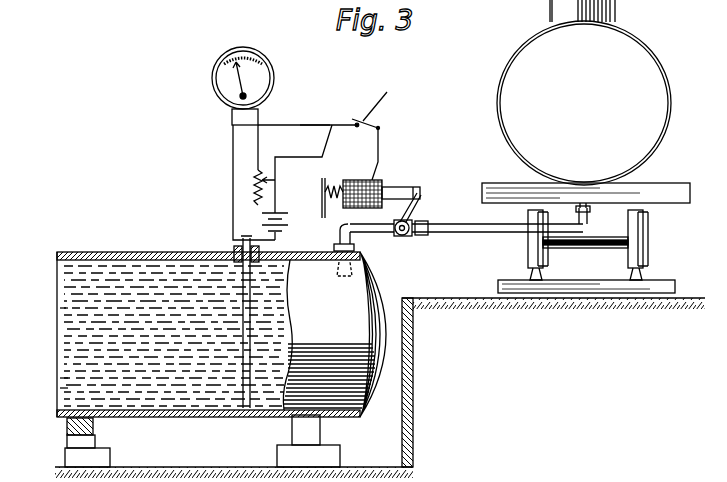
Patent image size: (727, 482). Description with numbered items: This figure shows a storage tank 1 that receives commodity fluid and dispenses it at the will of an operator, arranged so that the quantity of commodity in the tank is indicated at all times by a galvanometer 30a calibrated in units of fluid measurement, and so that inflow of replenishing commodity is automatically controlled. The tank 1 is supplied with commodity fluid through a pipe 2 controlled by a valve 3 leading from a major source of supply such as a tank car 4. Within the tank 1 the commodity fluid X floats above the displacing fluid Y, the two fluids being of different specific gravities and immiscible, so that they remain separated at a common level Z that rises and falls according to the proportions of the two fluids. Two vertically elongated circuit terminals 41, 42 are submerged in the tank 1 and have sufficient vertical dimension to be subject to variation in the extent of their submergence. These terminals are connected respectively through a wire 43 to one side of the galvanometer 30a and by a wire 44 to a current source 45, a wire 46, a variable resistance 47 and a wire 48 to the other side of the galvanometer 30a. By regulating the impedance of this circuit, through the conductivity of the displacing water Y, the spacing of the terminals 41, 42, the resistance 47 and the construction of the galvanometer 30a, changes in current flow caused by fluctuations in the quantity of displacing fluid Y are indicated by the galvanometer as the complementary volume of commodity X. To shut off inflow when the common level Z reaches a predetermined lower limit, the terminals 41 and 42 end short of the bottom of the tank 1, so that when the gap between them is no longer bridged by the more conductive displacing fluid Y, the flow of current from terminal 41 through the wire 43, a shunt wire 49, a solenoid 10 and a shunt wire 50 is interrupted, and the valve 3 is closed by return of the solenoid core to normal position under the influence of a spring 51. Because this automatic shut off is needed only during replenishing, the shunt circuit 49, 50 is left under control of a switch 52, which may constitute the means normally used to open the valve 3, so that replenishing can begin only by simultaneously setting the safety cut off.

The storage tank 1 is at (160, 418).
The pipe 2 is at (364, 250).
The valve 3 is at (492, 230).
The tank car 4 is at (586, 146).
The solenoid 10 is at (374, 181).
The galvanometer 30a is at (222, 82).
The circuit terminal 41 is at (222, 238).
The circuit terminal 42 is at (276, 250).
The wire 43 is at (233, 188).
The wire 44 is at (262, 240).
The current source 45 is at (290, 219).
The wire 46 is at (280, 199).
The variable resistance 47 is at (253, 170).
The wire 48 is at (259, 141).
The shunt wire 49 is at (312, 123).
The shunt wire 50 is at (330, 118).
The spring 51 is at (336, 185).
The switch 52 is at (376, 104).
The commodity fluid x is at (57, 308).
The displacing fluid y is at (57, 389).
The common level z is at (57, 378).